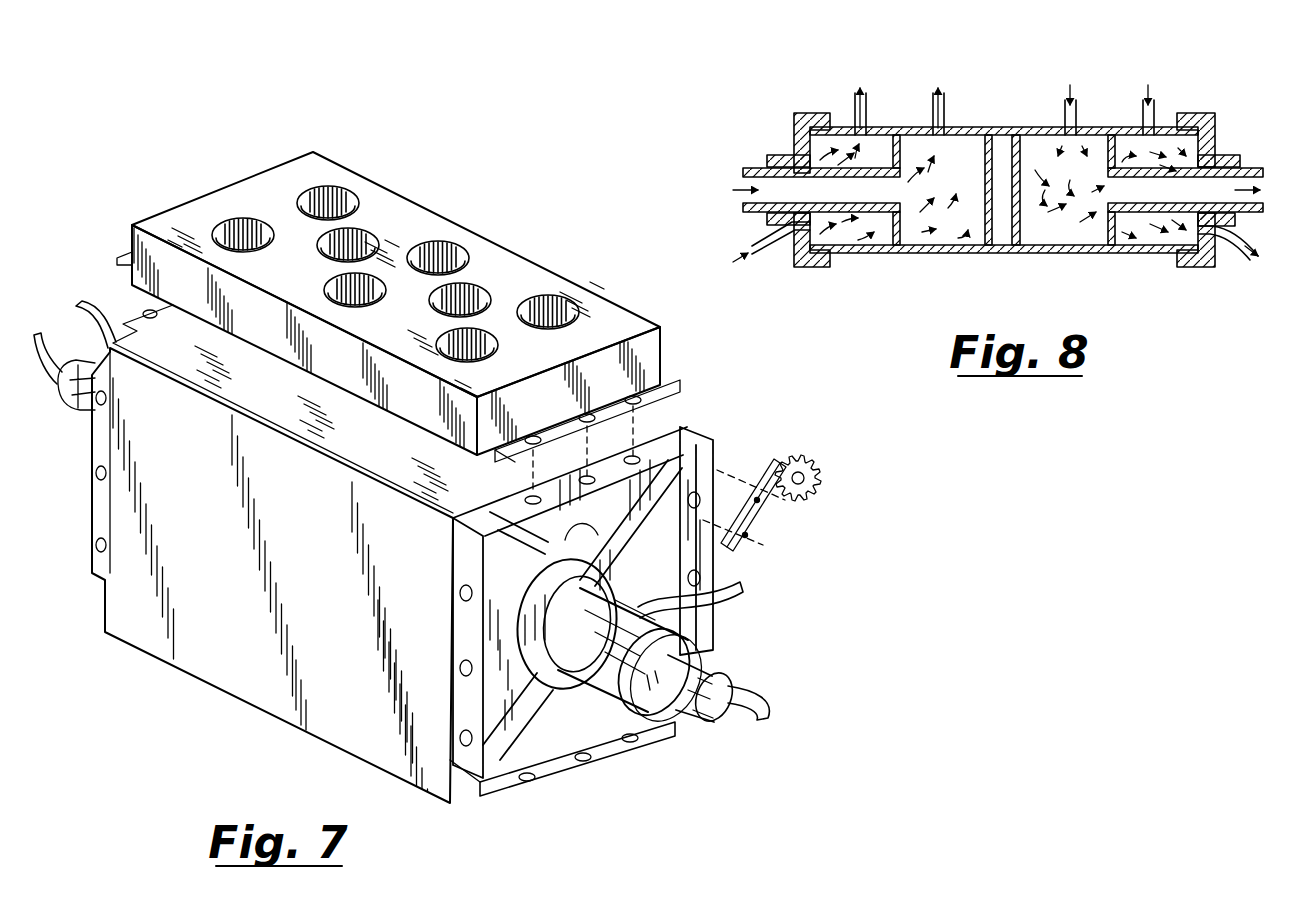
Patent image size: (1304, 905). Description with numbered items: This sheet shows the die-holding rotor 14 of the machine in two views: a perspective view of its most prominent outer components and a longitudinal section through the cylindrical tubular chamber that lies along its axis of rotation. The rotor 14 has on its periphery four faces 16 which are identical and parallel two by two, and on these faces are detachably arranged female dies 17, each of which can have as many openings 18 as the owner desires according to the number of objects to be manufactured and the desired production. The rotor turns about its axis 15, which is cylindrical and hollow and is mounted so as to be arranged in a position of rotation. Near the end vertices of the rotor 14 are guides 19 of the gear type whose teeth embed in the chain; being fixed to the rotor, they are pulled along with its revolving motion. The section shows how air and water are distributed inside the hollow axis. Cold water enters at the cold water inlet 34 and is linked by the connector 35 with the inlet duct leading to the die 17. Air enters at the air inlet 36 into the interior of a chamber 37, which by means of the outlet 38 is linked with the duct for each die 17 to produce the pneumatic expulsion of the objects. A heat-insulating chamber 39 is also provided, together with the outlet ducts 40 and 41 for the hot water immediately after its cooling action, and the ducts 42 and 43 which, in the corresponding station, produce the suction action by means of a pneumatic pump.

In FIG. 7, the die-holding rotor 14 is at (458, 193).
In FIG. 7, the axis of the rotor 15 is at (597, 660).
In FIG. 8, the axis of the rotor 15 is at (1137, 254).
In FIG. 7, the faces 16 is at (230, 660).
In FIG. 7, the female dies 17 is at (545, 265).
In FIG. 7, the openings 18 is at (337, 190).
In FIG. 7, the guides 19 is at (800, 462).
In FIG. 7, the cold water inlet 34 is at (740, 722).
In FIG. 8, the cold water inlet 34 is at (752, 186).
In FIG. 8, the connector 35 is at (937, 128).
In FIG. 7, the air inlet 36 is at (748, 592).
In FIG. 8, the air inlet 36 is at (784, 238).
In FIG. 8, the chamber 37 is at (884, 232).
In FIG. 8, the outlet 38 is at (858, 125).
In FIG. 8, the heat-insulating chamber 39 is at (1003, 212).
In FIG. 8, the outlet duct 40 is at (1066, 110).
In FIG. 7, the outlet duct 41 is at (44, 348).
In FIG. 8, the outlet duct 41 is at (1254, 168).
In FIG. 8, the duct 42 is at (1148, 108).
In FIG. 7, the duct 43 is at (76, 306).
In FIG. 8, the duct 43 is at (1226, 252).